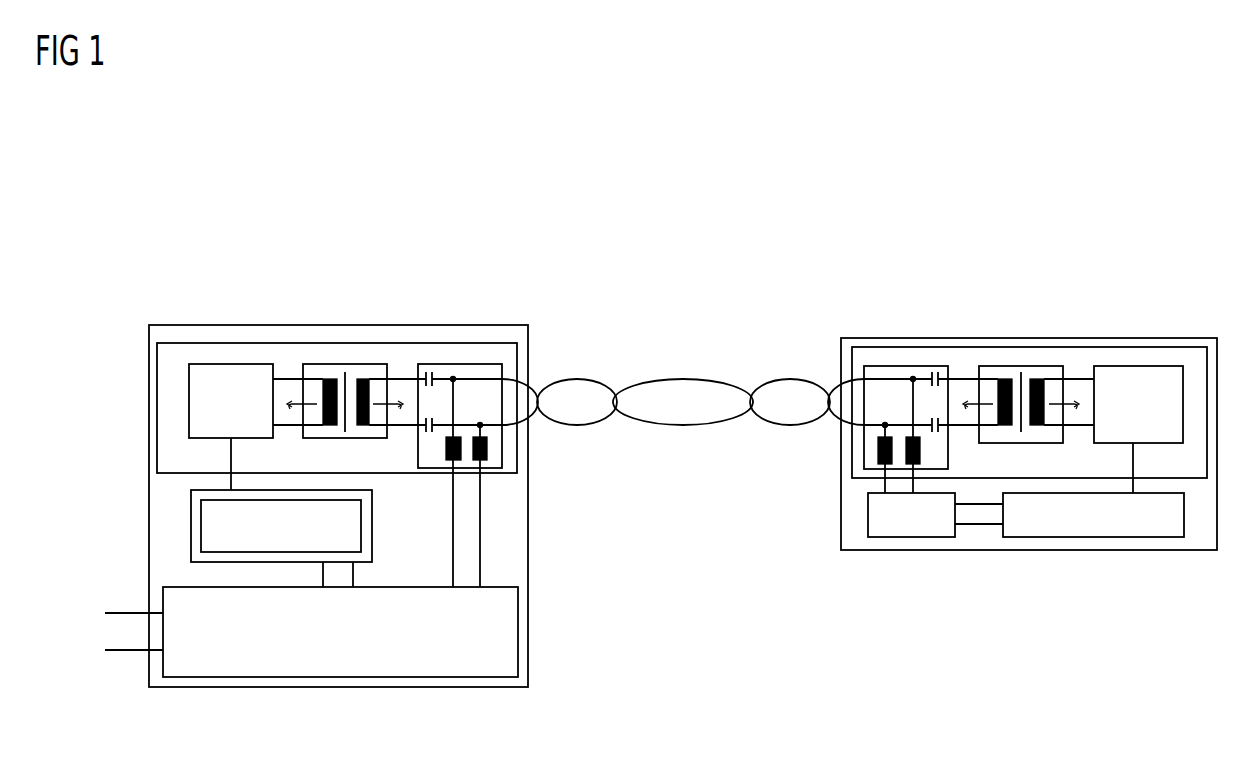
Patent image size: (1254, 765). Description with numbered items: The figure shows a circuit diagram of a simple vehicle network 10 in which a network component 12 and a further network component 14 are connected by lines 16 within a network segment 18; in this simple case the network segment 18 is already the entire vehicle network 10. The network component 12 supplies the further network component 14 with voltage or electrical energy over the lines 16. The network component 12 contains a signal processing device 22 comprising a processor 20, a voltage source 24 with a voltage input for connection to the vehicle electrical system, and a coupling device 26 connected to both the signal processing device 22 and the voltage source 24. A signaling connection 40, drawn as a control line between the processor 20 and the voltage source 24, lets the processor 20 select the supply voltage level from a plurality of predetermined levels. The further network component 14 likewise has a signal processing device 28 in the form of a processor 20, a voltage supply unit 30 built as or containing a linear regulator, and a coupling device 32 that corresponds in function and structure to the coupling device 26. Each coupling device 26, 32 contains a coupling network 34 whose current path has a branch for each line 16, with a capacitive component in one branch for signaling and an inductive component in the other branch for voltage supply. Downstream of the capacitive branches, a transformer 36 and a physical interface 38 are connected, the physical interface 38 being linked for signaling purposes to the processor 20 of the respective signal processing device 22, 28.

The vehicle network 10 is at (815, 256).
The network component 12 is at (528, 563).
The further network component 14 is at (997, 550).
The lines 16 is at (638, 423).
The network segment 18 is at (644, 506).
The processor 20 is at (201, 545).
The signal processing device 22 is at (191, 502).
The voltage source 24 is at (343, 677).
The coupling device 26 is at (400, 343).
The signal processing device 28 is at (1093, 537).
The voltage supply unit 30 is at (908, 537).
The coupling device 32 is at (1079, 347).
The coupling network 34 is at (457, 364).
The transformer 36 is at (343, 364).
The physical interface 38 is at (228, 364).
The signaling connection 40 is at (231, 457).